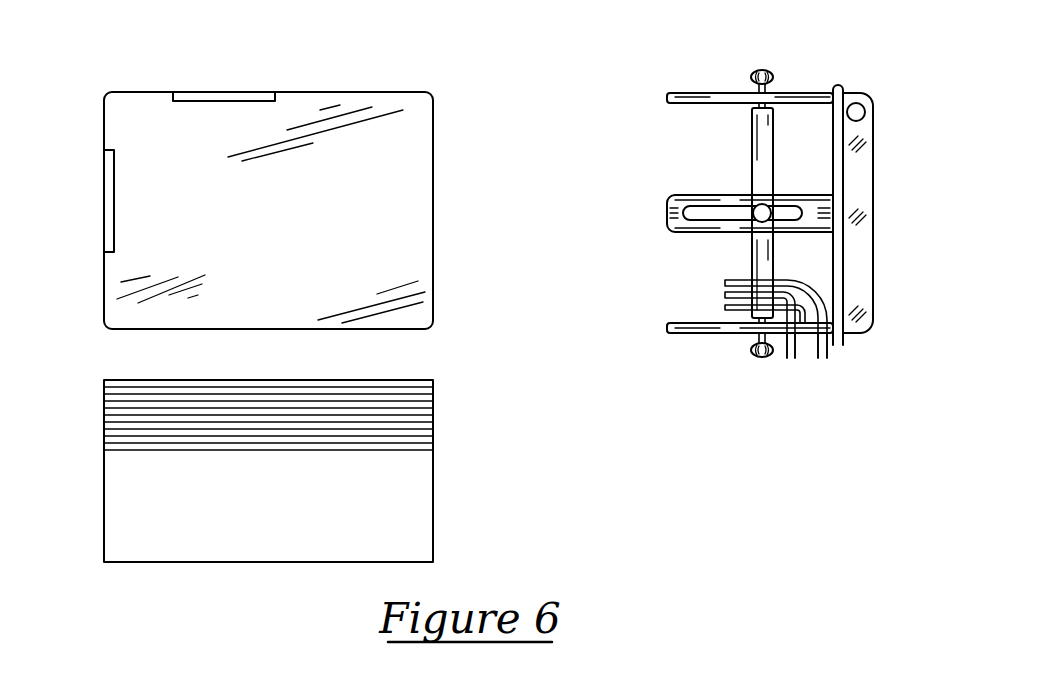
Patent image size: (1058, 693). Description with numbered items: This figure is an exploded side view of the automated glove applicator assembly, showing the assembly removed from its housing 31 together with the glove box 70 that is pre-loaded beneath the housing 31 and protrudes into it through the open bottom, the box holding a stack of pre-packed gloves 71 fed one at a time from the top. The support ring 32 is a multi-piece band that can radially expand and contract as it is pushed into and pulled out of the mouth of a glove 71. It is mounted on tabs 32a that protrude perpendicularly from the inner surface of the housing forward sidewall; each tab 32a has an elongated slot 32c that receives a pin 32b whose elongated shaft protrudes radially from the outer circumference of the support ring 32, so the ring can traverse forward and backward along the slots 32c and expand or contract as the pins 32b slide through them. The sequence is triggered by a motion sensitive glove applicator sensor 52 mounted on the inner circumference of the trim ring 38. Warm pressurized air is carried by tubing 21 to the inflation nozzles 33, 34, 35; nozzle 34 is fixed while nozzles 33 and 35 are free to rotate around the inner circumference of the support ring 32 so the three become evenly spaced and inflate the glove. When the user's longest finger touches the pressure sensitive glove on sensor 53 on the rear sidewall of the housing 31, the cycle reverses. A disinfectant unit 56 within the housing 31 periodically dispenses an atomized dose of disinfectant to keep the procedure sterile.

The housing 31 is at (362, 92).
The disinfectant unit 56 is at (260, 92).
The glove on sensor 53 is at (104, 197).
The glove box 70 is at (432, 522).
The pre-packed glove 71 is at (432, 427).
The trim ring 38 is at (873, 292).
The glove applicator sensor 52 is at (867, 112).
The sliding inflation nozzle 35 is at (838, 85).
The fixed inflation nozzle 34 is at (725, 294).
The sliding inflation nozzle 33 is at (725, 307).
The tubing 21 is at (827, 352).
The support ring 32 is at (752, 137).
The tab 32a is at (683, 92).
The pin 32b is at (762, 69).
The elongated slot 32c is at (683, 207).